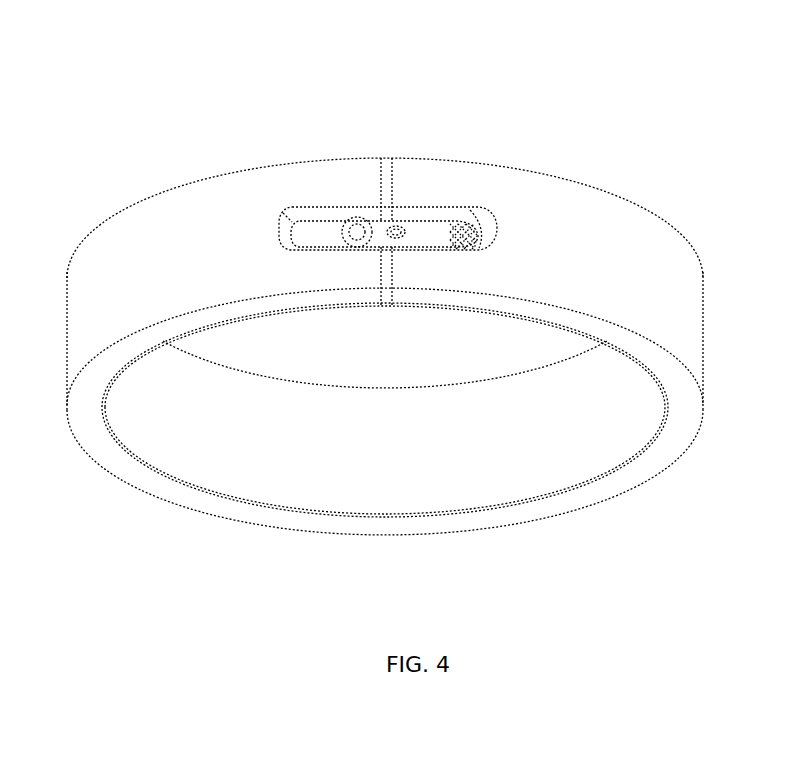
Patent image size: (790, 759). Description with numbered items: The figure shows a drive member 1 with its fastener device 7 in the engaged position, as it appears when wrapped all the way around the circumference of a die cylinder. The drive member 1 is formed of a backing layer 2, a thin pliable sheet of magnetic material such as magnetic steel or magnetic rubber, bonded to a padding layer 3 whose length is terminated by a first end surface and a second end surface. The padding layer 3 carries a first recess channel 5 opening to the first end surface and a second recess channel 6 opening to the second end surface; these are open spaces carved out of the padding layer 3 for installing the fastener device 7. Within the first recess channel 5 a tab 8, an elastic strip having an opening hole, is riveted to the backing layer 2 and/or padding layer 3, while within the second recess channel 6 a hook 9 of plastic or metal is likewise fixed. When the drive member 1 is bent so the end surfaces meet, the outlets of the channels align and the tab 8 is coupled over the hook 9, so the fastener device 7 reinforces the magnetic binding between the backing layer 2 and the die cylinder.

The drive member 1 is at (596, 122).
The backing layer 2 is at (170, 206).
The padding layer 3 is at (245, 321).
The first recess channel 5 is at (334, 211).
The second recess channel 6 is at (445, 207).
The fastener device 7 is at (387, 213).
The tab 8 is at (322, 228).
The hook 9 is at (402, 224).